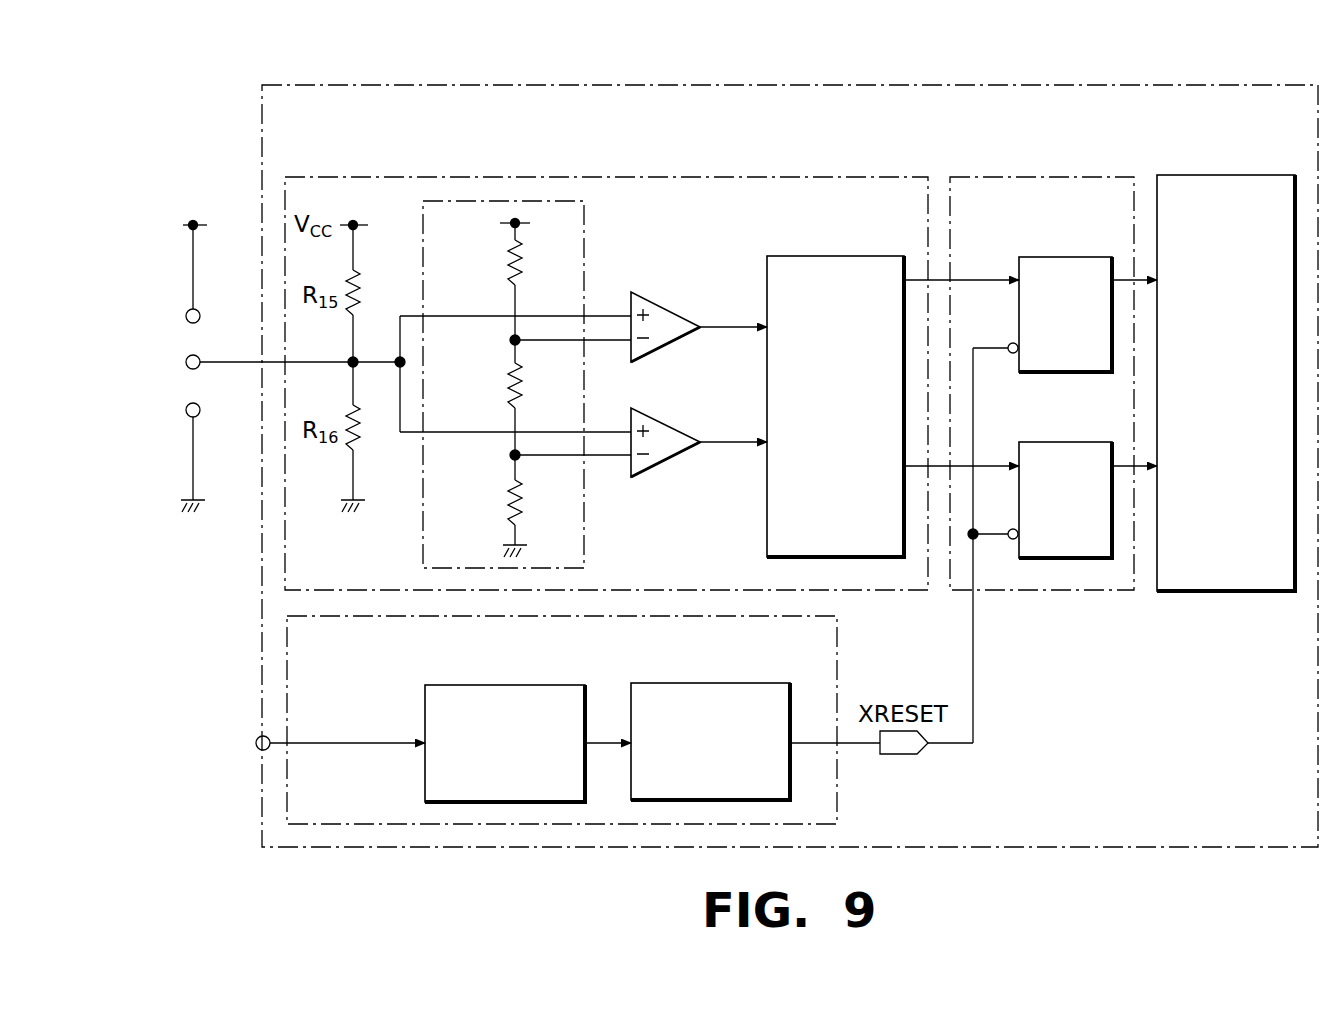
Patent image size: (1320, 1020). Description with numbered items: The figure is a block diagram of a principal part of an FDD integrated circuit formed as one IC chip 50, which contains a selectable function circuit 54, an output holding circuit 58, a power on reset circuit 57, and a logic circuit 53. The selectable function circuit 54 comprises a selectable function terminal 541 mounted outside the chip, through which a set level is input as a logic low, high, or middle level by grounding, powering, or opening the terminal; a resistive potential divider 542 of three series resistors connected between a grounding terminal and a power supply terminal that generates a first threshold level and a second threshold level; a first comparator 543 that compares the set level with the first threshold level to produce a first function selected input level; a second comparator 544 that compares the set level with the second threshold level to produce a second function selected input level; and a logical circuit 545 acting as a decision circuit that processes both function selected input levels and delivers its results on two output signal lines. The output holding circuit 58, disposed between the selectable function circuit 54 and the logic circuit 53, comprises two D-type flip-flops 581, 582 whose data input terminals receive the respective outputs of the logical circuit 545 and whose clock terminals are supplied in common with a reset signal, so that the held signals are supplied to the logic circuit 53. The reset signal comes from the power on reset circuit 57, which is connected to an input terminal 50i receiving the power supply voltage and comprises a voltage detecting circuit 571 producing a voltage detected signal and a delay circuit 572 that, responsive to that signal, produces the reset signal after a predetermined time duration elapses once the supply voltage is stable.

The one IC chip 50 is at (307, 85).
The selectable function circuit 54 is at (380, 176).
The selectable function terminal 541 is at (225, 366).
The resistive potential divider 542 is at (586, 220).
The first comparator 543 is at (669, 418).
The second comparator 544 is at (669, 302).
The logical circuit 545 is at (843, 256).
The output holding circuit 58 is at (976, 176).
The D-type flip-flop 581 is at (1060, 442).
The D-type flip-flop 582 is at (1060, 257).
The logic circuit 53 is at (1228, 175).
The power on reset circuit 57 is at (837, 781).
The voltage detecting circuit 571 is at (516, 685).
The delay circuit 572 is at (723, 683).
The input terminal 50i is at (256, 743).